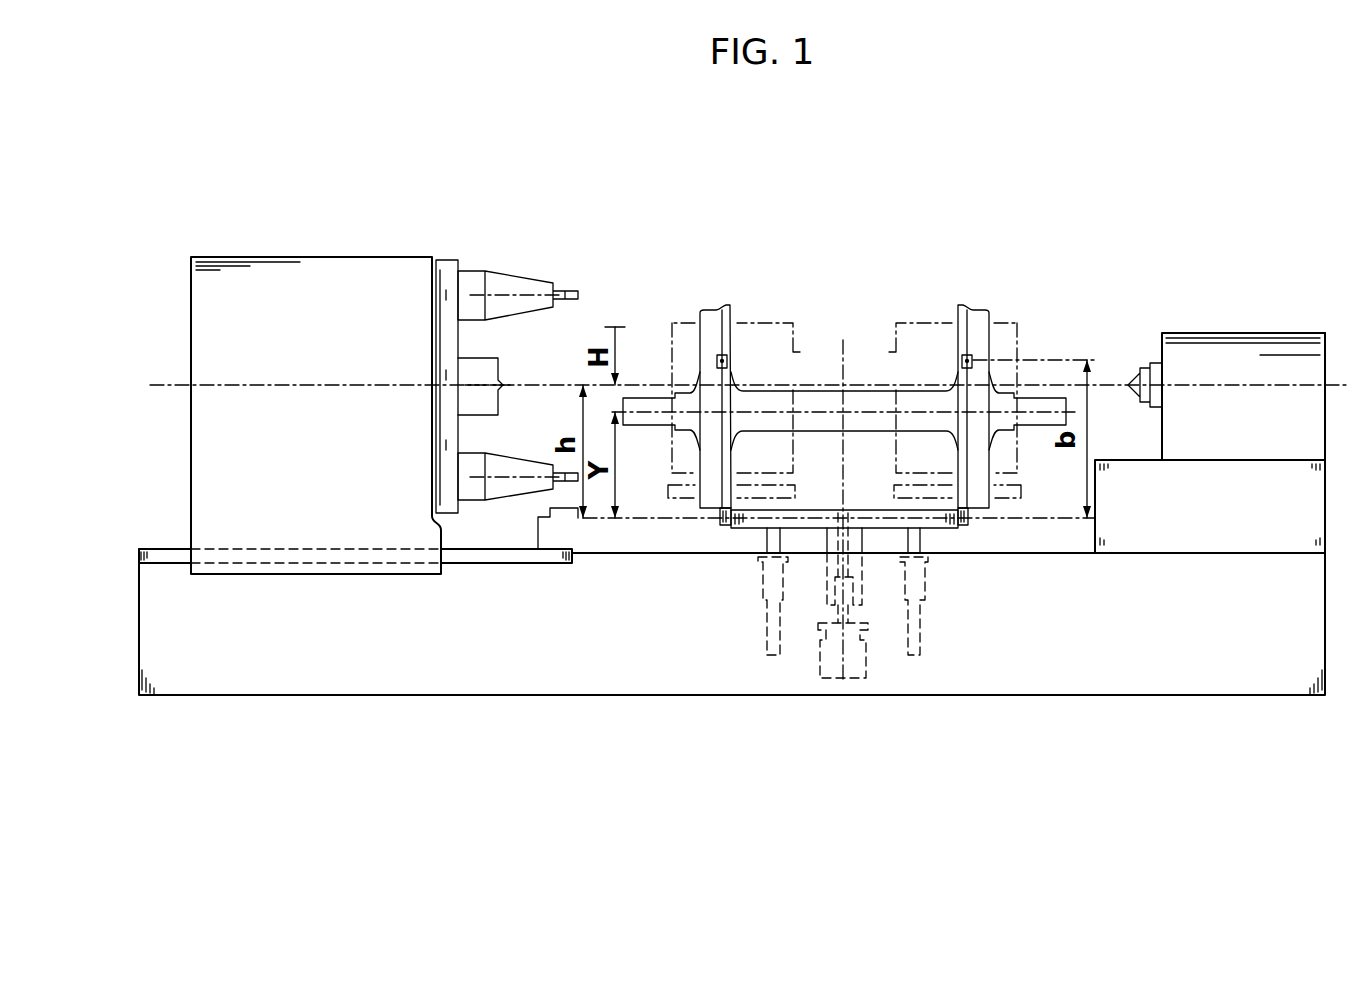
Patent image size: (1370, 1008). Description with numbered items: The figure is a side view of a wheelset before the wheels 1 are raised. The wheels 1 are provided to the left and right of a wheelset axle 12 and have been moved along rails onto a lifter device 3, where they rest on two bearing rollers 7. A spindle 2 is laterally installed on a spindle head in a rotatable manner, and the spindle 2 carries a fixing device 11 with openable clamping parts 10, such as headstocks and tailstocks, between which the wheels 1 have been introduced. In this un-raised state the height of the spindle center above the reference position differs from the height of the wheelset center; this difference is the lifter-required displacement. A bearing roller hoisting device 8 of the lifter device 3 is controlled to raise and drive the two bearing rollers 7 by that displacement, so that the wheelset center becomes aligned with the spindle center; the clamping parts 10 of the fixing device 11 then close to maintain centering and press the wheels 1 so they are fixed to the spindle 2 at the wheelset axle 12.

The wheels 1 is at (712, 313).
The spindle 2 is at (455, 240).
The lifter device 3 is at (763, 665).
The bearing rollers 7 is at (723, 527).
The bearing roller hoisting device 8 is at (868, 657).
The clamping parts 10 is at (550, 283).
The fixing device 11 is at (545, 256).
The wheelset axle 12 is at (808, 400).